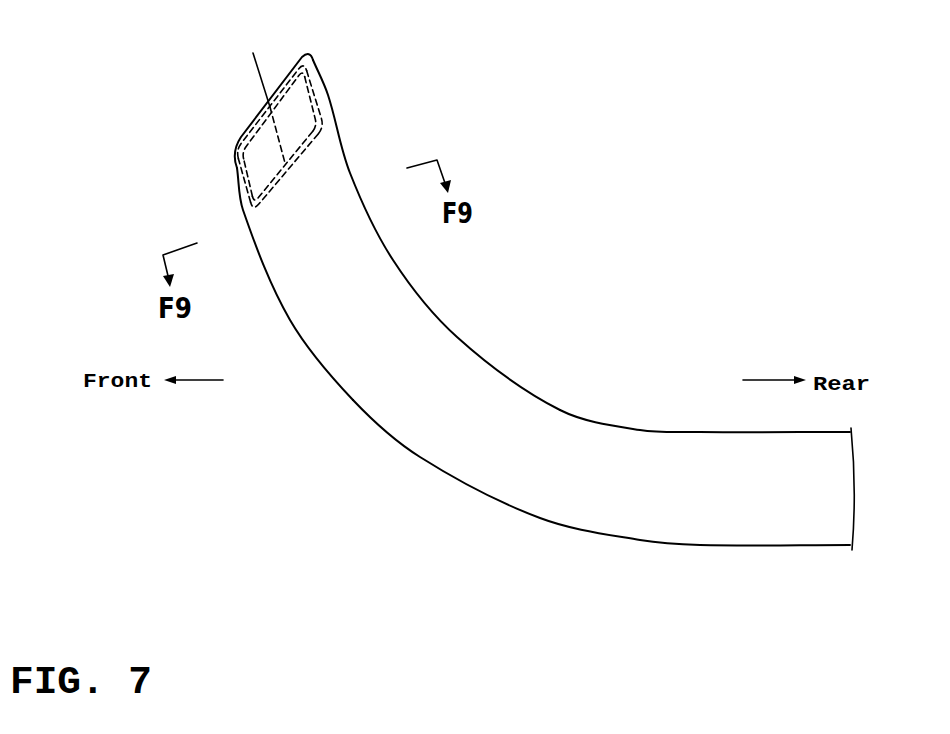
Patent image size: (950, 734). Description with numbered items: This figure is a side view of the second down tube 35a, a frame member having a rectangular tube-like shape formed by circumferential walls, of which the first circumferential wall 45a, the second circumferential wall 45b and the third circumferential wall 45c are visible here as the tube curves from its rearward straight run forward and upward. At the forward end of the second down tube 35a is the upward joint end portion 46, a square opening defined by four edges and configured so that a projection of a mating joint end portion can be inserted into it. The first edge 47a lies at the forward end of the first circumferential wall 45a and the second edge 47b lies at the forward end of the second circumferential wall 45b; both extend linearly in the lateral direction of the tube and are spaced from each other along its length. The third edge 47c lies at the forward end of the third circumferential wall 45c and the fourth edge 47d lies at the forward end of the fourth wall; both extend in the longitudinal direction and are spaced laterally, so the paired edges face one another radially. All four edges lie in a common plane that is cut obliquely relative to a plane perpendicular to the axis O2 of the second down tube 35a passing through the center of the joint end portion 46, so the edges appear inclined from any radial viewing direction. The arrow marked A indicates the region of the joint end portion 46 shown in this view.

The second down tube 35a is at (547, 417).
The first circumferential wall 45a is at (290, 321).
The second circumferential wall 45b is at (393, 260).
The third circumferential wall 45c is at (362, 395).
The joint end portion 46 is at (303, 62).
The first edge 47a is at (233, 175).
The second edge 47b is at (328, 83).
The third edge 47c is at (245, 129).
The fourth edge 47d is at (285, 163).
The axis of the second down tube O2 is at (258, 72).
The region A is at (366, 130).